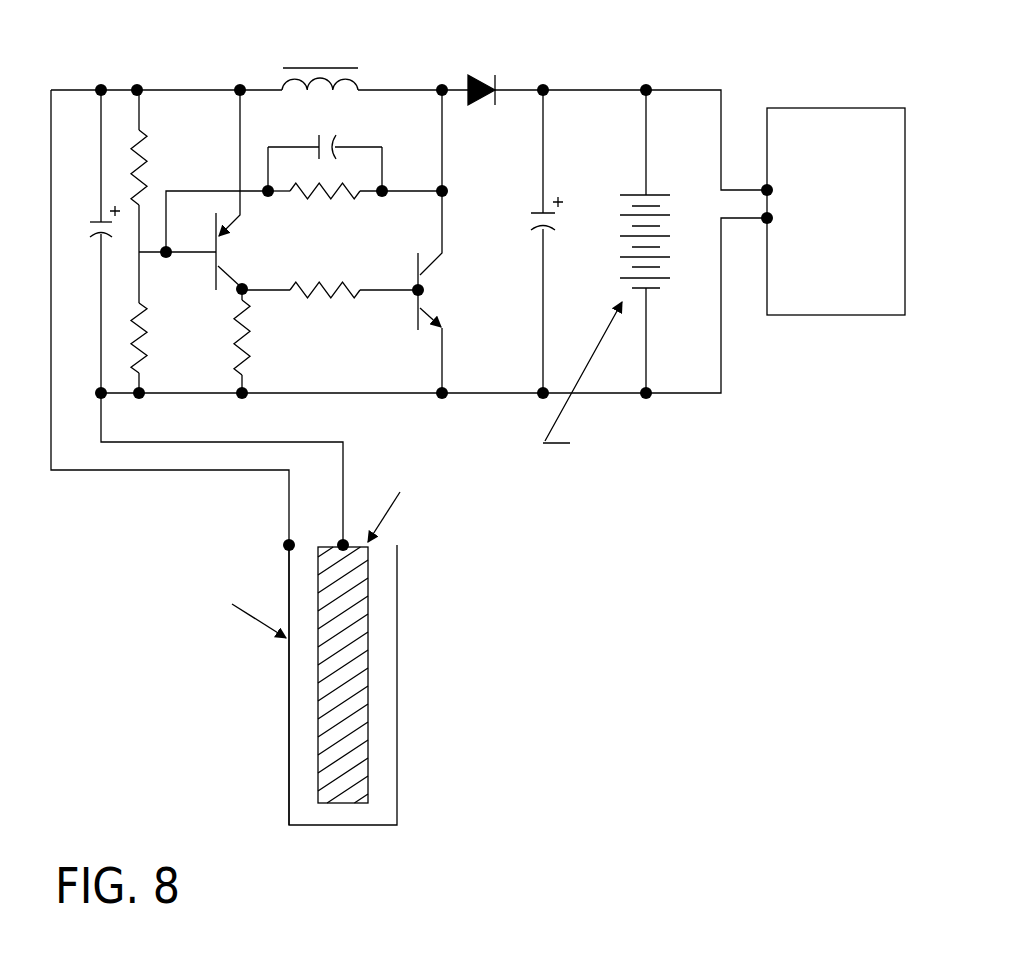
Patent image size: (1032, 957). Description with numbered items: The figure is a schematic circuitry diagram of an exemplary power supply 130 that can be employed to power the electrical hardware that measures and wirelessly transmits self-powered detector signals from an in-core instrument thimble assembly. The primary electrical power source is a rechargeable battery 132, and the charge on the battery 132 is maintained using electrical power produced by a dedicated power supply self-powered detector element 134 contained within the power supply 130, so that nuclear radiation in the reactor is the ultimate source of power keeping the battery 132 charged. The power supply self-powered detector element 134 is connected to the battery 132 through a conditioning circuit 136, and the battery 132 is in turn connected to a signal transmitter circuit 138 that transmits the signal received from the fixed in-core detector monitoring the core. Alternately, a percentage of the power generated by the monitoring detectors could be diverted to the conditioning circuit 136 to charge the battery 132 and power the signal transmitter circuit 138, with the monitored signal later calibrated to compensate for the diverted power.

The power supply 130 is at (752, 673).
The rechargeable battery 132 is at (638, 190).
The power supply self-powered detector element 134 is at (397, 785).
The conditioning circuit 136 is at (118, 91).
The signal transmitter circuit 138 is at (815, 108).